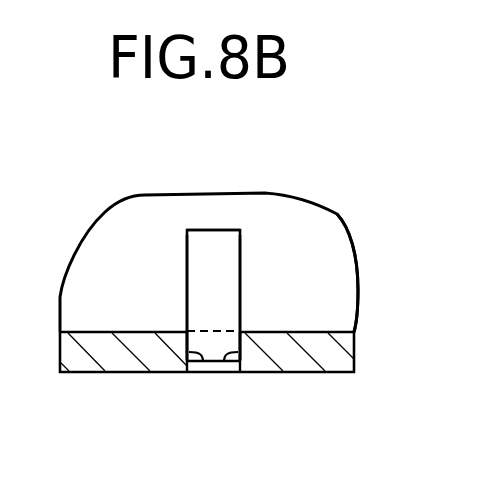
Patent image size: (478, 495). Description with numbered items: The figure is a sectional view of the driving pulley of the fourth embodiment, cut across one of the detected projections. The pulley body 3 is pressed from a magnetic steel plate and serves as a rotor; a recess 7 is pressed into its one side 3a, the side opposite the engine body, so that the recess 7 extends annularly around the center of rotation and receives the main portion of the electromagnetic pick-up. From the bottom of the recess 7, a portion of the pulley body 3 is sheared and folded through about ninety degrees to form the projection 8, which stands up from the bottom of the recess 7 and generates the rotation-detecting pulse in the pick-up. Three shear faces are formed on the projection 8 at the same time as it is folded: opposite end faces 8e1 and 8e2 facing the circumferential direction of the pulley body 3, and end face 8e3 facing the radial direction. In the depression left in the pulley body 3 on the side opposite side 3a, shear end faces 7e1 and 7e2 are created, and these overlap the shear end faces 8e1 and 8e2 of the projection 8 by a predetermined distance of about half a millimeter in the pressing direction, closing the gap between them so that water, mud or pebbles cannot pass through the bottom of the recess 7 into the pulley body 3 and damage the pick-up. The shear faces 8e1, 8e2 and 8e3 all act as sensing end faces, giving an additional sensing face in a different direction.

The pulley body 3 is at (110, 387).
The one side of the pulley body 3a is at (333, 332).
The recess 7 is at (120, 332).
The shear end face 7e1 is at (230, 373).
The shear end face 7e2 is at (200, 372).
The detected projection 8 is at (198, 214).
The shear end face of the projection 8e1 is at (241, 283).
The shear end face of the projection 8e2 is at (187, 282).
The end face of the projection 8e3 is at (223, 229).